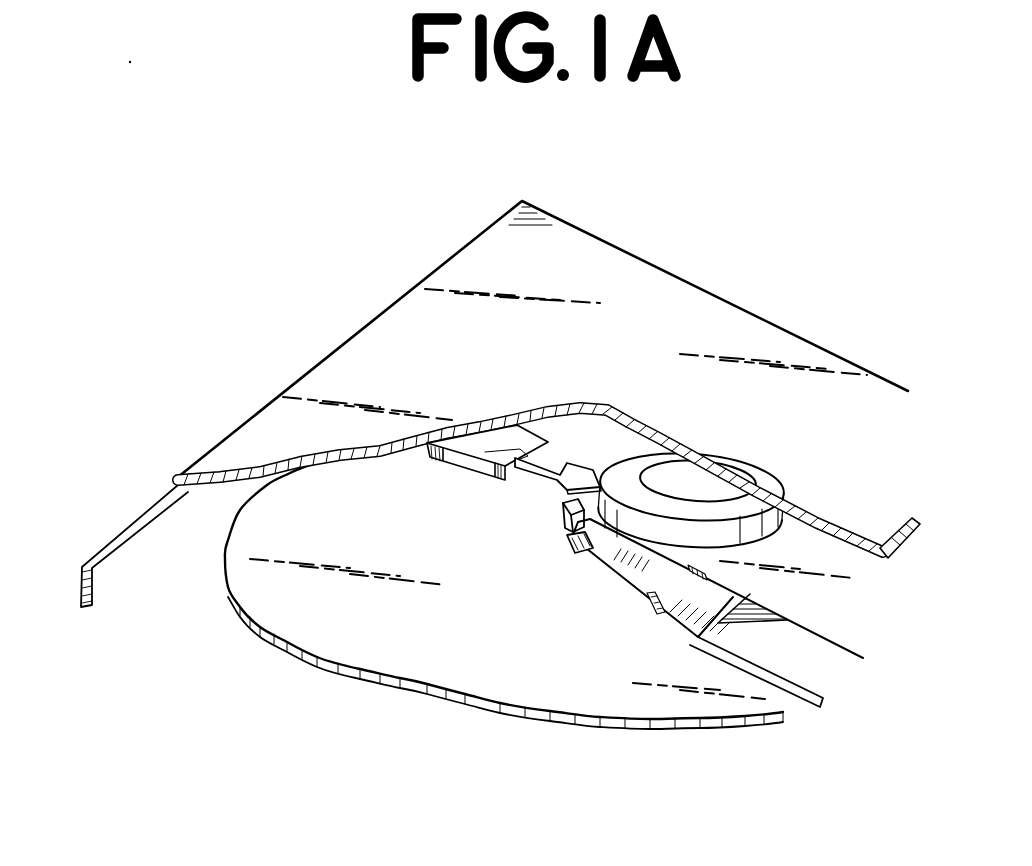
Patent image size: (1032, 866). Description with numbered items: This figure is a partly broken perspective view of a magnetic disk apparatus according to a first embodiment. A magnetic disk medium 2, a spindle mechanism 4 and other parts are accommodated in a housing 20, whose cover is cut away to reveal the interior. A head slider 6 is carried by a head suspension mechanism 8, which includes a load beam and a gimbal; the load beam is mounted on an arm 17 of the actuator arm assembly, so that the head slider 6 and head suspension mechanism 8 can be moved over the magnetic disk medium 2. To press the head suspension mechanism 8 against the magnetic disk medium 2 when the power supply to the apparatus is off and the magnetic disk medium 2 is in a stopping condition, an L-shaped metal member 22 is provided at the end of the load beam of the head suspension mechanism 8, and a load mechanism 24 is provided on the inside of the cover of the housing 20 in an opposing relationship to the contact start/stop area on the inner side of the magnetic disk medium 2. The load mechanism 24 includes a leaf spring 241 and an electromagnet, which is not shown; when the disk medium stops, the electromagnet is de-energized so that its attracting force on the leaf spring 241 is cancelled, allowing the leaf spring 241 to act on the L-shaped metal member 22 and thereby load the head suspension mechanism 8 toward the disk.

The magnetic disk medium 2 is at (353, 650).
The spindle mechanism 4 is at (727, 508).
The head slider 6 is at (573, 547).
The head suspension mechanism 8 is at (665, 595).
The arm 17 is at (820, 657).
The housing 20 is at (633, 273).
The L-shaped metal member 22 is at (563, 508).
The load mechanism 24 is at (441, 461).
The leaf spring 241 is at (560, 466).